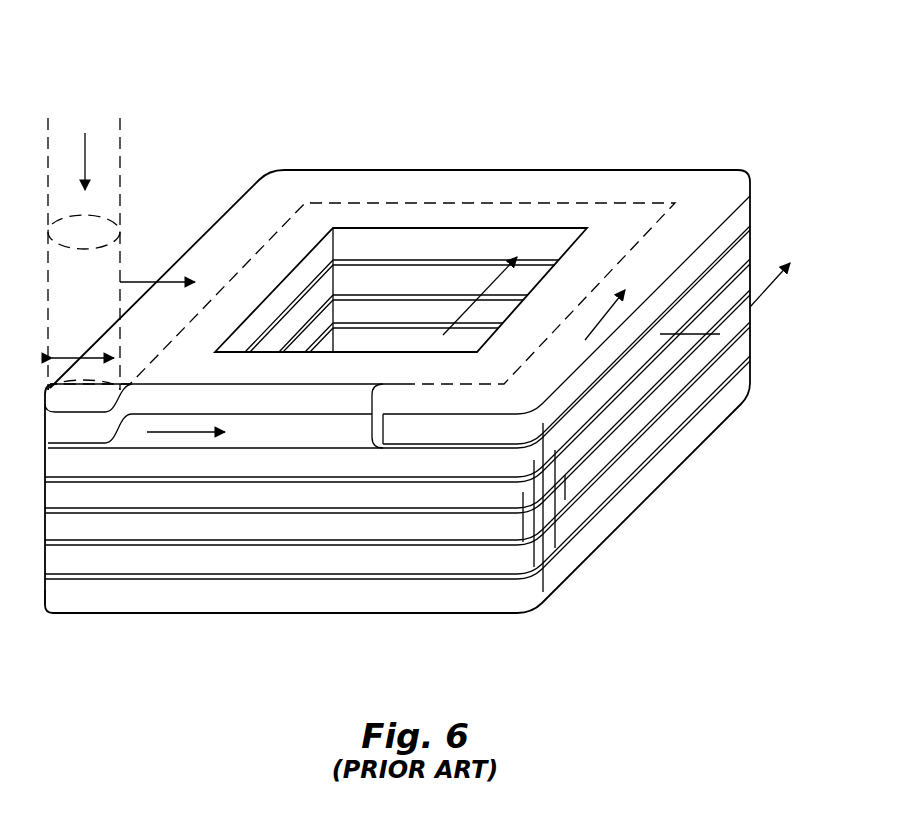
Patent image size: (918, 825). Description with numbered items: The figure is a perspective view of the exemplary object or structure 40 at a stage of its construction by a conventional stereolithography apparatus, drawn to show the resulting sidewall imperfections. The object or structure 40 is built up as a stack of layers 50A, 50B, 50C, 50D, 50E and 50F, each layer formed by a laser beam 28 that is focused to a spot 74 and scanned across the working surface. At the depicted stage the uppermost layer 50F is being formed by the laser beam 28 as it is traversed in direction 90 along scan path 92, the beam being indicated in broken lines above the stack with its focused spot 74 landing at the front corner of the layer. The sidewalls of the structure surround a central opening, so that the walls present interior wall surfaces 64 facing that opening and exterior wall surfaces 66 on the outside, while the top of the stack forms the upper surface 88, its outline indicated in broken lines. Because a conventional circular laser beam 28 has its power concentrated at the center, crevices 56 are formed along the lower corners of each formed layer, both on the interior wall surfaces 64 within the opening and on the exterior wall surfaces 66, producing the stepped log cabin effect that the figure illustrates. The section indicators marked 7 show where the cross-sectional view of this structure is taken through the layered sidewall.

The object or structure 40 is at (787, 108).
The laser beam 28 is at (120, 140).
The crevices 56 is at (350, 323).
The interior wall surfaces 64 is at (258, 318).
The exterior wall surfaces 66 is at (372, 602).
The section line 7- 7 is at (628, 286).
The spot 74 is at (73, 402).
The upper surface 88 is at (652, 197).
The direction 90 is at (143, 281).
The scan path 92 is at (602, 315).
The layer 50A is at (262, 601).
The layer 50B is at (397, 467).
The layer 50C is at (397, 433).
The layer 50D is at (397, 401).
The layer 50E is at (397, 370).
The layer 50F is at (399, 337).